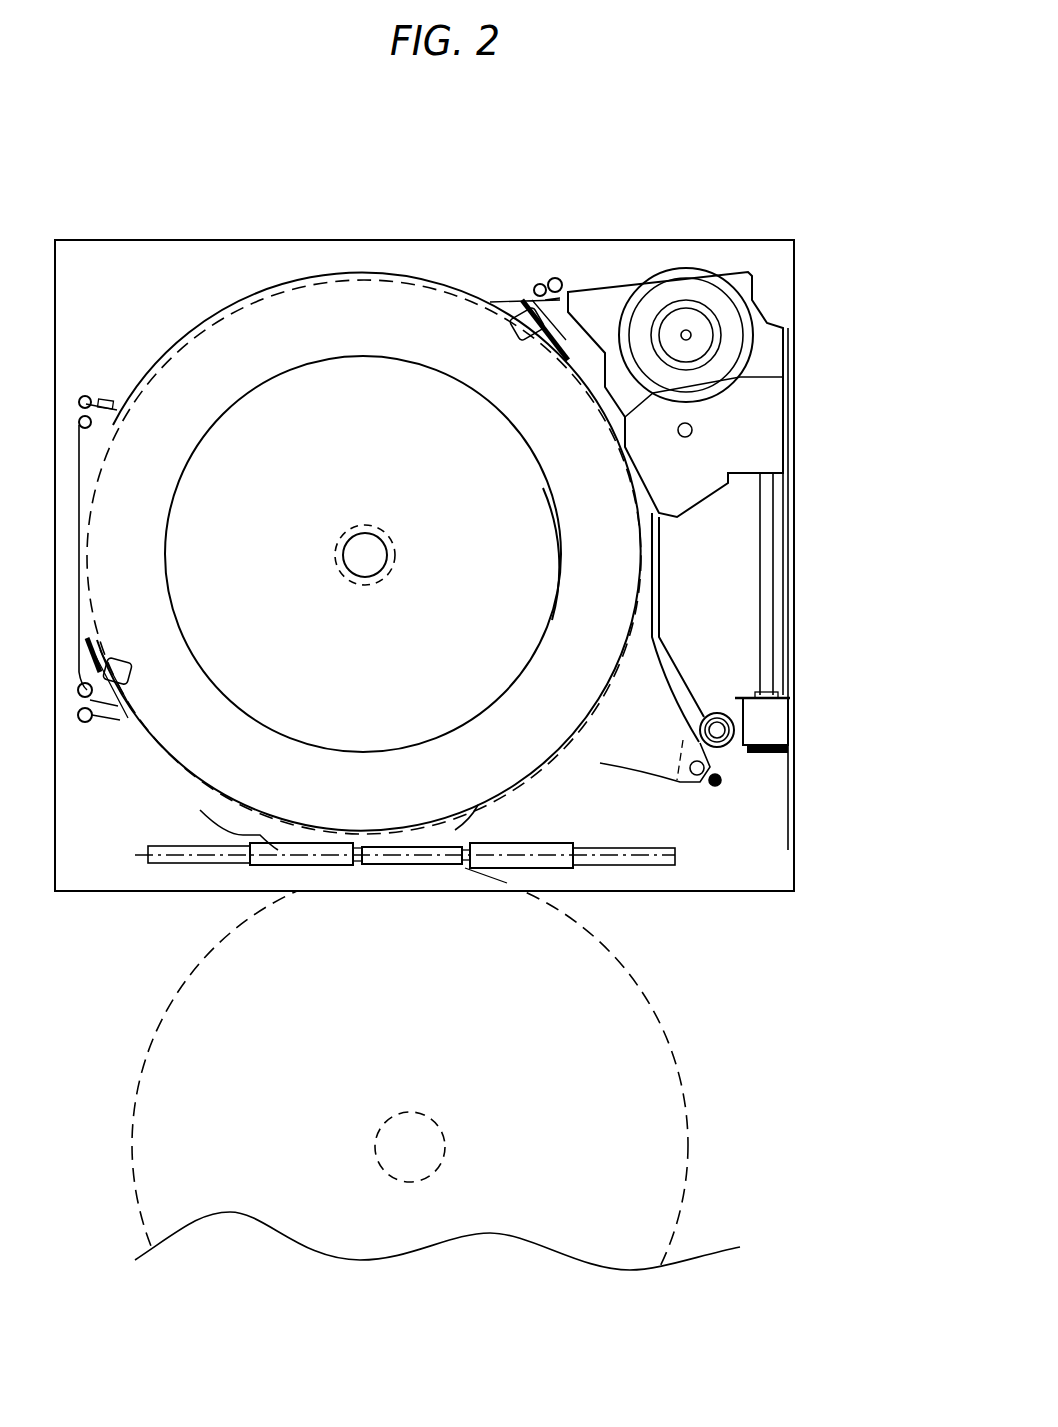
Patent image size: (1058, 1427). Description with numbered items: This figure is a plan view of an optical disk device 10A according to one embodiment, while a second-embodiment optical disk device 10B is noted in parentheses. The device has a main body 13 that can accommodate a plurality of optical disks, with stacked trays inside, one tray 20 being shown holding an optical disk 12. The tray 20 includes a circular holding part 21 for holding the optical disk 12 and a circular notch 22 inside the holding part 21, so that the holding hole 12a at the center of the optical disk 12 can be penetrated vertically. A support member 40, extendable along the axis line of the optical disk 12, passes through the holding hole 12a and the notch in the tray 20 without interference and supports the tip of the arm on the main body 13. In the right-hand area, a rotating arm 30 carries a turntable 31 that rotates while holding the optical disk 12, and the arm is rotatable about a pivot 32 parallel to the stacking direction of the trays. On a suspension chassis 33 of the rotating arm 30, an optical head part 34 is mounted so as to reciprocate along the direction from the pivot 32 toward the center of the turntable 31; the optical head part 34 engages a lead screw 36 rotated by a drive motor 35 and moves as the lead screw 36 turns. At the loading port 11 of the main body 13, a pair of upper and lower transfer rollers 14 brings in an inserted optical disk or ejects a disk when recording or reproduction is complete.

The optical disk device 10A is at (265, 228).
The optical disk device 10B is at (177, 176).
The loading port 11 is at (683, 893).
The optical disk 12 is at (368, 272).
The holding hole 12a is at (398, 558).
The main body 13 is at (760, 905).
The transfer rollers 14 is at (305, 868).
The tray 20 is at (465, 286).
The circular holding part 21 is at (462, 372).
The circular notch 22 is at (543, 488).
The rotating arm 30 is at (768, 296).
The turntable 31 is at (677, 283).
The pivot 32 is at (718, 738).
The suspension chassis 33 is at (737, 632).
The optical head part 34 is at (698, 522).
The drive motor 35 is at (770, 720).
The lead screw 36 is at (772, 540).
The support member 40 is at (336, 545).